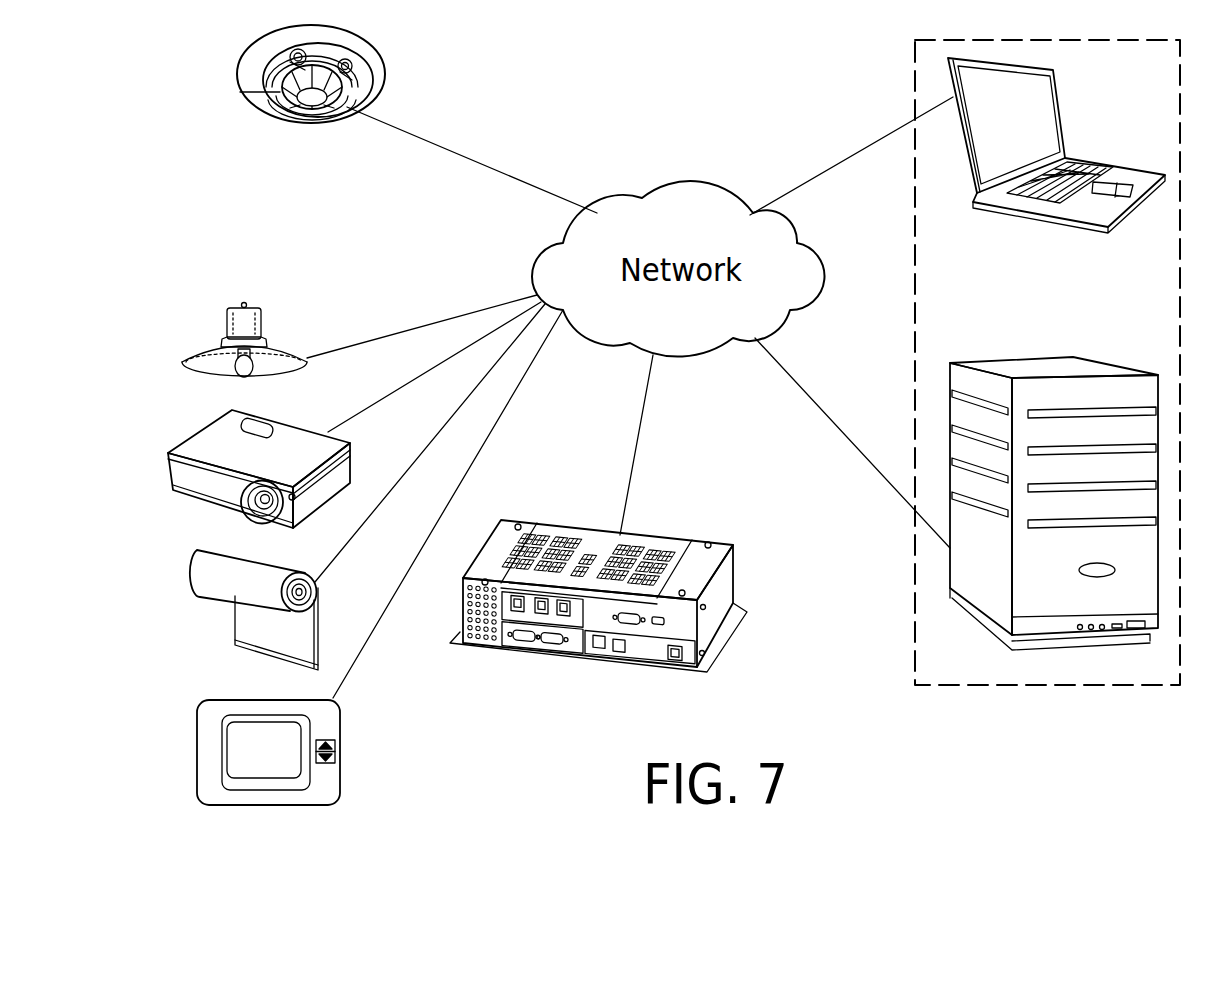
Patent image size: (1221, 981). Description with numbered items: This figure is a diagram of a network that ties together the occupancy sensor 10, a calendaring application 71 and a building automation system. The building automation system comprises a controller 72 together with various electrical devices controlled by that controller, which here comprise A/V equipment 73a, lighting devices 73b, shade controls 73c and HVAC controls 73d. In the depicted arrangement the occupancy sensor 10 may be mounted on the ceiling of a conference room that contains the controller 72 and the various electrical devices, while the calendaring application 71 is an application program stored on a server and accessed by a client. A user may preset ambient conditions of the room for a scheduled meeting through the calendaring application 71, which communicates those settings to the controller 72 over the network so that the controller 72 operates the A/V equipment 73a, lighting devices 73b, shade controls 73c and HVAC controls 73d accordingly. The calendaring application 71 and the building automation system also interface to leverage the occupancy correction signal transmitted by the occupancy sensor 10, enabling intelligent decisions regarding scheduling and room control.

The occupancy sensor 10 is at (385, 88).
The calendaring application 71 is at (1000, 687).
The controller 72 is at (733, 553).
The A/V equipment 73a is at (262, 326).
The lighting devices 73b is at (352, 462).
The shade controls 73c is at (320, 620).
The HVAC controls 73d is at (341, 777).